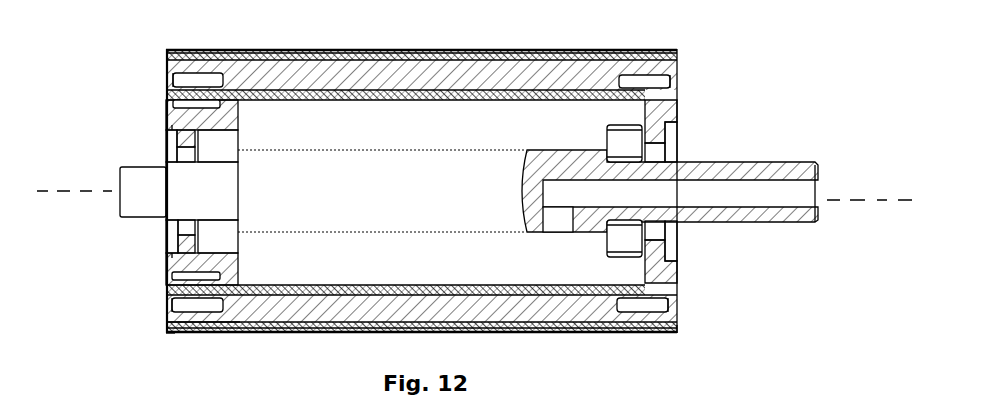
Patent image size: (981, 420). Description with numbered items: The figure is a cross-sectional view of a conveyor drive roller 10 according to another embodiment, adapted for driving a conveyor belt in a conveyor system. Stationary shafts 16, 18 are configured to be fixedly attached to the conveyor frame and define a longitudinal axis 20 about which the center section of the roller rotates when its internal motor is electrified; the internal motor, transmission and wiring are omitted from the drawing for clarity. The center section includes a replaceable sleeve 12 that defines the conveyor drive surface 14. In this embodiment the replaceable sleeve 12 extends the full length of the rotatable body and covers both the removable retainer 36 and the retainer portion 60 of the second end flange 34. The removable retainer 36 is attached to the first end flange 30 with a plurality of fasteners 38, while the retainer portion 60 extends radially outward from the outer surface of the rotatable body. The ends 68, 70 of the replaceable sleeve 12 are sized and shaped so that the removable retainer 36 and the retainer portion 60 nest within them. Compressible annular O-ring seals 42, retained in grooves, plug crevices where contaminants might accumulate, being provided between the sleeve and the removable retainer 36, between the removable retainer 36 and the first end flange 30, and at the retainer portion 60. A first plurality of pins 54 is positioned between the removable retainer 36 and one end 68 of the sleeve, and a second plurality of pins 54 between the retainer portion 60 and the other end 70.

The conveyor drive roller 10 is at (548, 23).
The replaceable sleeve 12 is at (373, 72).
The conveyor drive surface 14 is at (492, 49).
The stationary shaft 16 is at (128, 212).
The stationary shaft 18 is at (717, 162).
The longitudinal axis 20 is at (62, 190).
The first end flange 30 is at (237, 117).
The second end flange 34 is at (672, 121).
The removable retainer 36 is at (168, 303).
The fasteners 38 is at (168, 107).
The O-ring seals 42 is at (176, 72).
The pins 54 is at (206, 82).
The retainer portion 60 is at (678, 79).
The end of the replaceable sleeve 68 is at (165, 334).
The end of the replaceable sleeve 70 is at (676, 334).